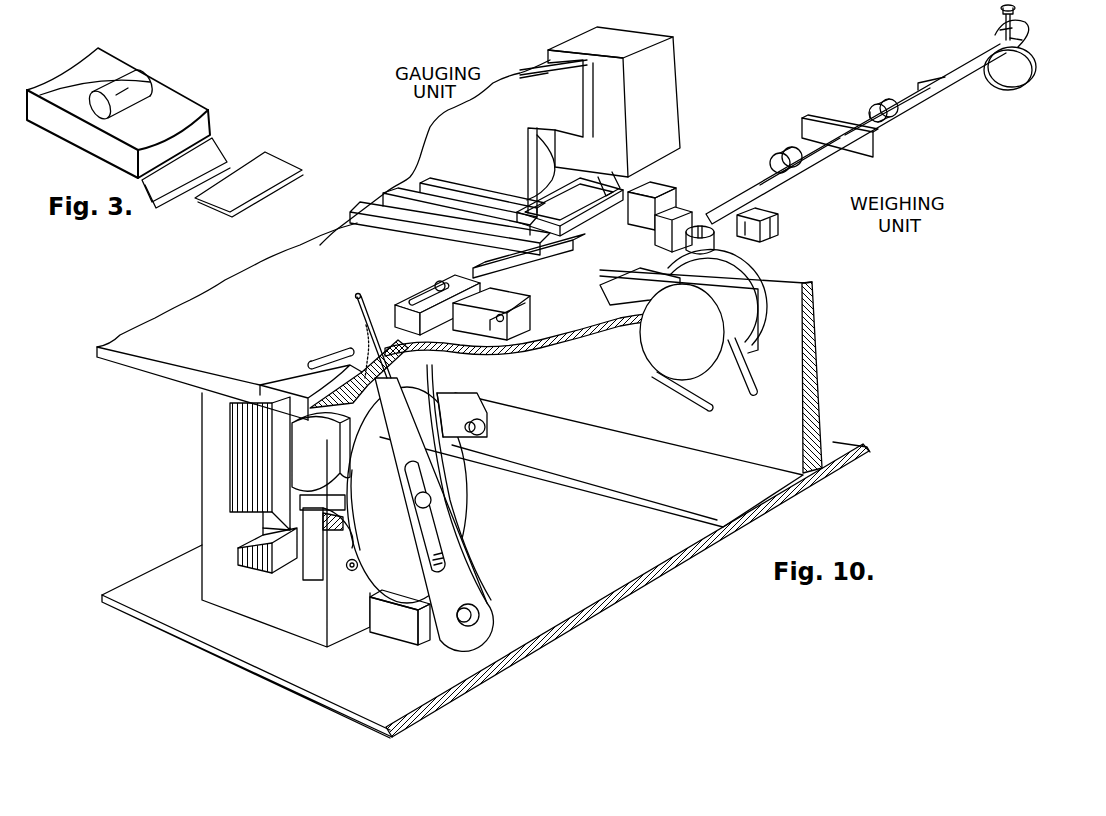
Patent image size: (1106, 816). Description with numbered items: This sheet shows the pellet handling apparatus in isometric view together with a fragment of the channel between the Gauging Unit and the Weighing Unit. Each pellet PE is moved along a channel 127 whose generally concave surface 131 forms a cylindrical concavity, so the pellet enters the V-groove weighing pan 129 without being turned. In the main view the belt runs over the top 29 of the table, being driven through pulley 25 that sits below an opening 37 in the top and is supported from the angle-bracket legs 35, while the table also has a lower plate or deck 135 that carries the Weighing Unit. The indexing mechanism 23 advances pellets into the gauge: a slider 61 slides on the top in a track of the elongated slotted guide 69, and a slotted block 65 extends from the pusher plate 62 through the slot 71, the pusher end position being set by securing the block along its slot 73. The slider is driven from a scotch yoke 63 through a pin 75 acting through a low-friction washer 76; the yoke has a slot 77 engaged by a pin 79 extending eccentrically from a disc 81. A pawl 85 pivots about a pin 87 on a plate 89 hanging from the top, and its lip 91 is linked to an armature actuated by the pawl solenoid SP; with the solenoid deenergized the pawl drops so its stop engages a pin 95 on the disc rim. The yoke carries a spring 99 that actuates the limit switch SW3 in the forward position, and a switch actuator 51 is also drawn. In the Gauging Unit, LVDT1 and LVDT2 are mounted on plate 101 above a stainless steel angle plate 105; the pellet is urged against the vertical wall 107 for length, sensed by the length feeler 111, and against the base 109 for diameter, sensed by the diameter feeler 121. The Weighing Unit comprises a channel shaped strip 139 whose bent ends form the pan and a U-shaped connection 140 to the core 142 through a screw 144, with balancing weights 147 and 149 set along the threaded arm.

In FIG. 3, the pellet PE is at (134, 82).
In FIG. 3, the concave surface 131 is at (167, 103).
In FIG. 3, the channel 127 is at (208, 110).
In FIG. 10, the channel 127 is at (715, 250).
In FIG. 3, the weighing pan 129 is at (238, 160).
In FIG. 10, the weighing pan 129 is at (717, 198).
In FIG. 10, the indexing mechanism 23 is at (512, 541).
In FIG. 10, the pulley 25 is at (730, 290).
In FIG. 10, the top 29 is at (252, 321).
In FIG. 10, the angle-bracket legs 35 is at (670, 490).
In FIG. 10, the opening 37 is at (630, 298).
In FIG. 10, the switch actuator 51 is at (527, 303).
In FIG. 10, the slider 61 is at (343, 347).
In FIG. 10, the pusher plate 62 is at (513, 248).
In FIG. 10, the scotch yoke 63 is at (446, 514).
In FIG. 10, the slotted block 65 is at (426, 295).
In FIG. 10, the elongated slotted guide 69 is at (288, 382).
In FIG. 10, the slot 71 is at (328, 348).
In FIG. 10, the slot 73 is at (455, 277).
In FIG. 10, the pin 75 is at (357, 297).
In FIG. 10, the washer 76 is at (367, 337).
In FIG. 10, the slot 77 is at (450, 550).
In FIG. 10, the pin 79 is at (430, 498).
In FIG. 10, the disc 81 is at (392, 577).
In FIG. 10, the pawl 85 is at (452, 398).
In FIG. 10, the pin 87 is at (485, 428).
In FIG. 10, the plate 89 is at (442, 368).
In FIG. 10, the lip 91 is at (293, 572).
In FIG. 10, the pin 95 is at (347, 570).
In FIG. 10, the spring 99 is at (465, 480).
In FIG. 10, the plate 101 is at (522, 88).
In FIG. 10, the angle plate 105 is at (640, 218).
In FIG. 10, the vertical wall 107 is at (673, 213).
In FIG. 10, the base 109 is at (605, 238).
In FIG. 10, the length feeler 111 is at (533, 182).
In FIG. 10, the diameter feeler 121 is at (643, 173).
In FIG. 10, the lower plate or deck 135 is at (593, 583).
In FIG. 10, the channel shaped strip 139 is at (833, 163).
In FIG. 10, the U-shaped connection 140 is at (1025, 23).
In FIG. 10, the core 142 is at (1036, 70).
In FIG. 10, the screw 144 is at (1000, 10).
In FIG. 10, the weights 147 is at (788, 153).
In FIG. 10, the weights 149 is at (897, 108).
In FIG. 10, the pawl solenoid SP is at (300, 452).
In FIG. 10, the limit switch SW3 is at (508, 327).
In FIG. 10, the linear variable differential transformer LVDT1 is at (552, 180).
In FIG. 10, the linear variable differential transformer LVDT2 is at (663, 67).